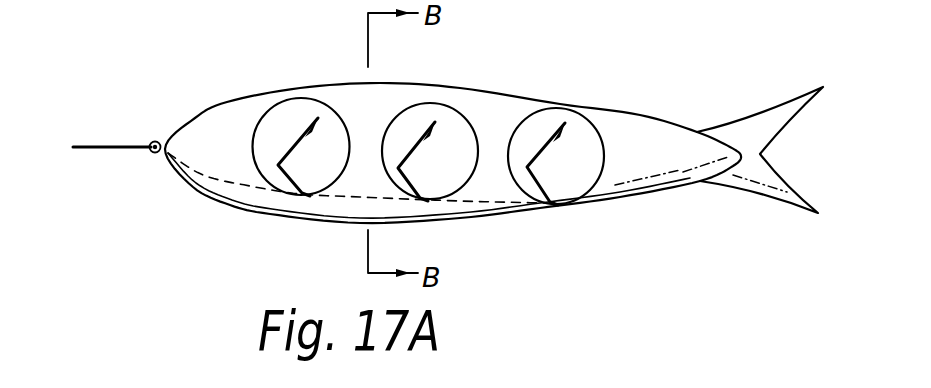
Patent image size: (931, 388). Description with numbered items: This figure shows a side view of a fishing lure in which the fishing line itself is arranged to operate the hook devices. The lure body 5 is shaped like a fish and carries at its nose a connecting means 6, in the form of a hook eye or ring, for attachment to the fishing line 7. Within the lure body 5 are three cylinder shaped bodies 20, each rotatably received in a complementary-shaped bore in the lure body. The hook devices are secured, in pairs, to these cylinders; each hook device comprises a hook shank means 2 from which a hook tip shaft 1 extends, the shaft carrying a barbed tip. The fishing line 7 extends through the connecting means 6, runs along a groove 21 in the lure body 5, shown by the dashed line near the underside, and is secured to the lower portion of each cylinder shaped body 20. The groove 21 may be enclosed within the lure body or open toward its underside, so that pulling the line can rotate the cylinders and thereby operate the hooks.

The hook tip shaft 1 is at (412, 145).
The hook shank means 2 is at (545, 186).
The lure body 5 is at (640, 132).
The connecting means 6 is at (157, 142).
The fishing line 7 is at (110, 147).
The cylinder shaped body 20 is at (273, 127).
The groove 21 is at (221, 190).